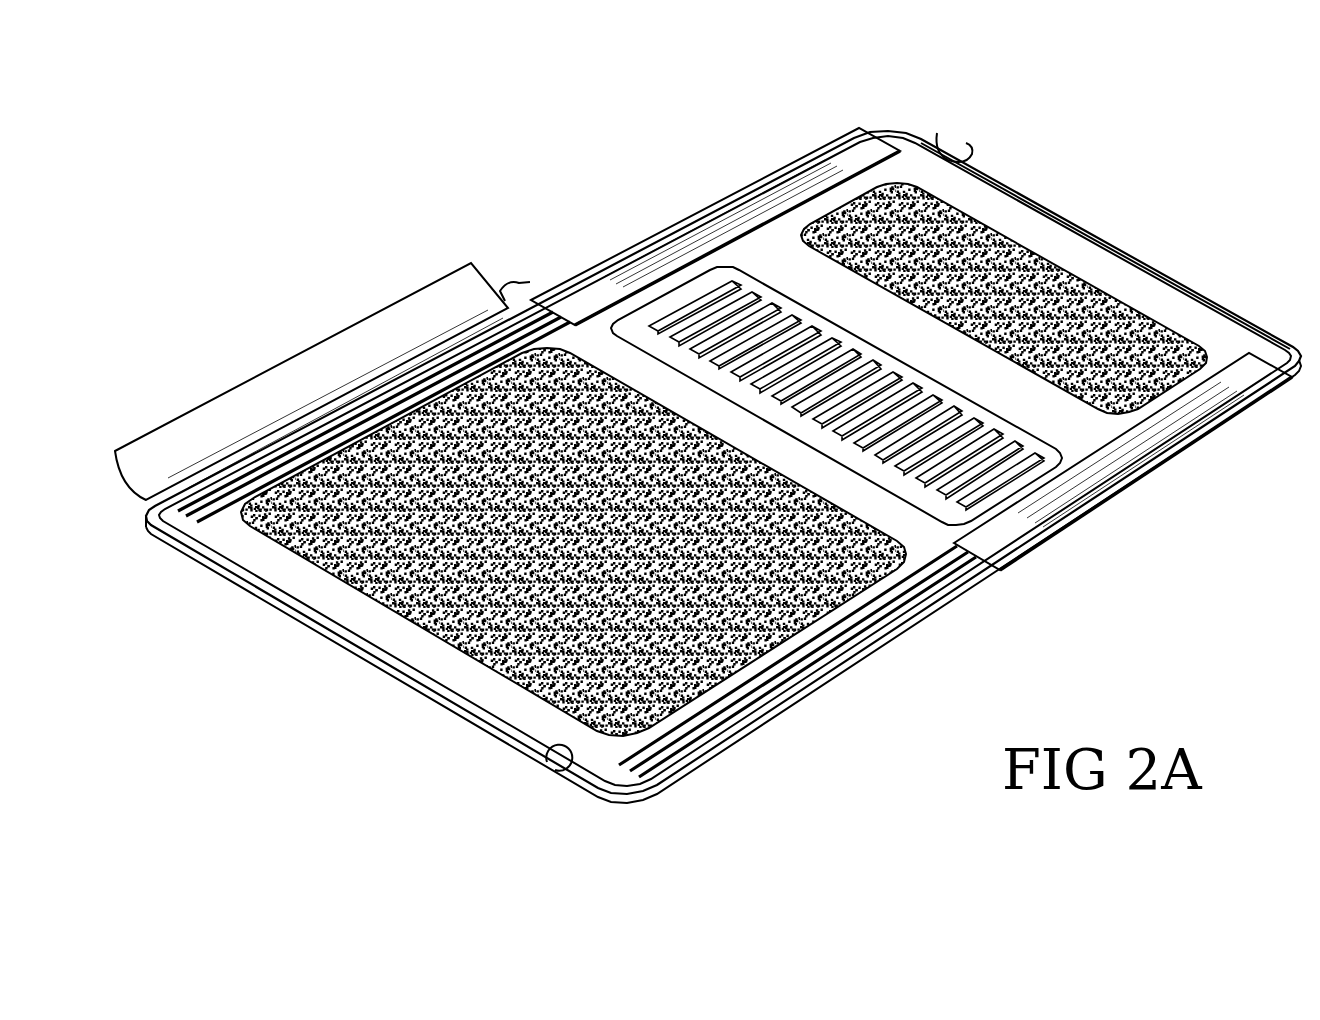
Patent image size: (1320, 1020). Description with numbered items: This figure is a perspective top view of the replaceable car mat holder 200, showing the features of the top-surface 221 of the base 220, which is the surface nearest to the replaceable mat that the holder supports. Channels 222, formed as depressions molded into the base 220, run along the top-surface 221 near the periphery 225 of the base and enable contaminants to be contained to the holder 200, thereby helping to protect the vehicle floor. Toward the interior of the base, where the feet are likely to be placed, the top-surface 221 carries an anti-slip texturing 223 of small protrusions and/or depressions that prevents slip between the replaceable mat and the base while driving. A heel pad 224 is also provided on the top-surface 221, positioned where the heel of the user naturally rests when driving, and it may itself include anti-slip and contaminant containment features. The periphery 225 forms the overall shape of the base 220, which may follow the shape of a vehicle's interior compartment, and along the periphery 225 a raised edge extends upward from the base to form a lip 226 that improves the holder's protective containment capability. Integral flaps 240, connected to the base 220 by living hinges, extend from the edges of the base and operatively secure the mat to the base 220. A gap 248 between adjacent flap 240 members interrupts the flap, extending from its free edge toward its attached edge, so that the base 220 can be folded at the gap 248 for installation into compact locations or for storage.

The replaceable car mat holder 200 is at (707, 442).
The base 220 is at (418, 678).
The top-surface 221 is at (978, 182).
The channels 222 is at (332, 446).
The anti-slip texturing 223 is at (1040, 293).
The heel pad 224 is at (1010, 475).
The periphery 225 is at (1075, 206).
The lip 226 is at (929, 125).
The integral flap 240 is at (705, 208).
The gap 248 is at (494, 284).